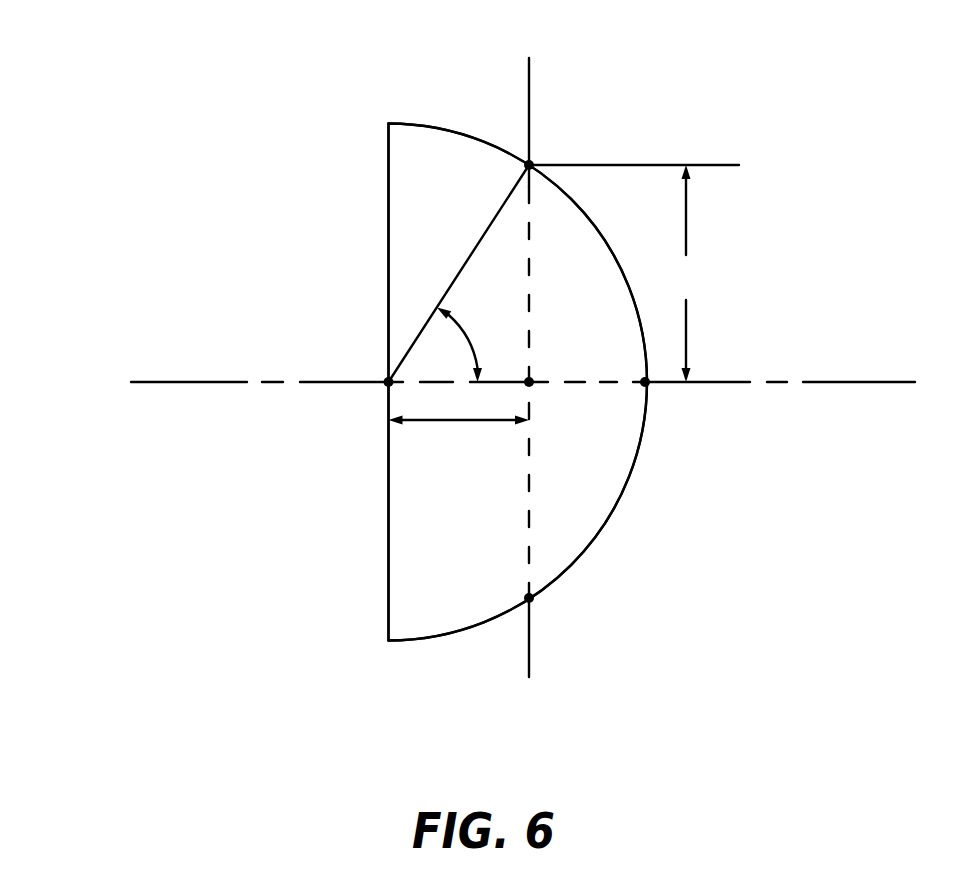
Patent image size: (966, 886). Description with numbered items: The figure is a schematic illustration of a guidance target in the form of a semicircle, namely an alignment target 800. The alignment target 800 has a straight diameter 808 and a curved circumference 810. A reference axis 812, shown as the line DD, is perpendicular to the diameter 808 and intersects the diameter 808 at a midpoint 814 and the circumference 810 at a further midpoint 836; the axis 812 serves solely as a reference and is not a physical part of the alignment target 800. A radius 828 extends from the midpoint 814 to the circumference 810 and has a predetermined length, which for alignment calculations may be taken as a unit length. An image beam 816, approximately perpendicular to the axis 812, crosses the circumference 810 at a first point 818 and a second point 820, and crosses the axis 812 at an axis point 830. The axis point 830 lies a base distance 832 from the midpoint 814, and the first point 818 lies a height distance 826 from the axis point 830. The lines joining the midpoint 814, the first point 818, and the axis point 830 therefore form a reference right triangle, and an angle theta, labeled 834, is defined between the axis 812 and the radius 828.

The alignment target 800 is at (168, 153).
The diameter 808 is at (388, 190).
The circumference 810 is at (588, 540).
The axis 812 is at (718, 382).
The midpoint 814 is at (373, 394).
The image beam 816 is at (530, 77).
The first point 818 is at (547, 152).
The second point 820 is at (545, 615).
The height distance 826 is at (634, 273).
The radius 828 is at (490, 227).
The axis point 830 is at (542, 365).
The base distance 832 is at (458, 420).
The angle θ 834 is at (468, 338).
The midpoint of circumference 836 is at (657, 399).